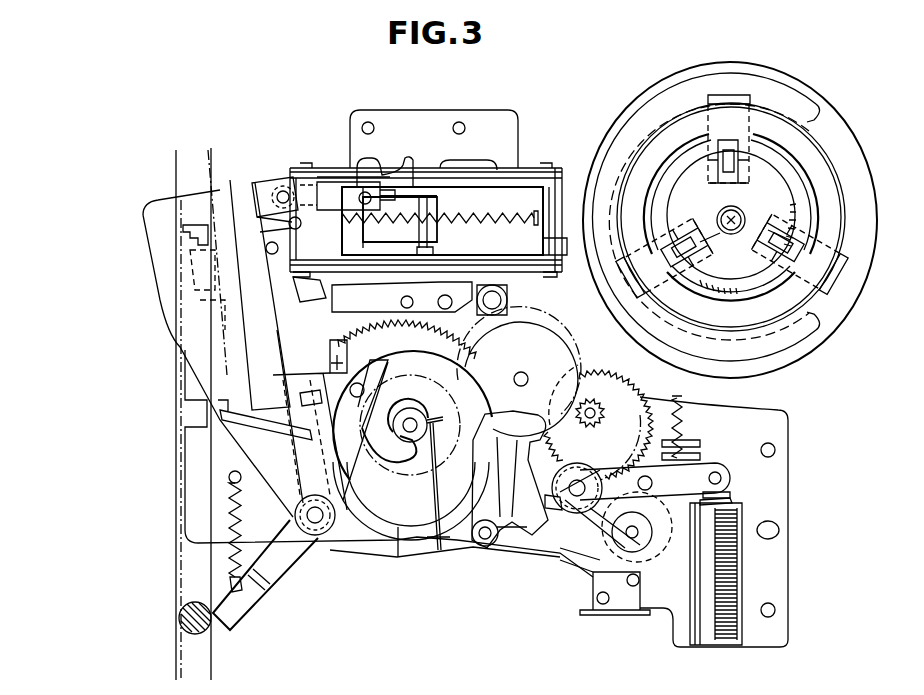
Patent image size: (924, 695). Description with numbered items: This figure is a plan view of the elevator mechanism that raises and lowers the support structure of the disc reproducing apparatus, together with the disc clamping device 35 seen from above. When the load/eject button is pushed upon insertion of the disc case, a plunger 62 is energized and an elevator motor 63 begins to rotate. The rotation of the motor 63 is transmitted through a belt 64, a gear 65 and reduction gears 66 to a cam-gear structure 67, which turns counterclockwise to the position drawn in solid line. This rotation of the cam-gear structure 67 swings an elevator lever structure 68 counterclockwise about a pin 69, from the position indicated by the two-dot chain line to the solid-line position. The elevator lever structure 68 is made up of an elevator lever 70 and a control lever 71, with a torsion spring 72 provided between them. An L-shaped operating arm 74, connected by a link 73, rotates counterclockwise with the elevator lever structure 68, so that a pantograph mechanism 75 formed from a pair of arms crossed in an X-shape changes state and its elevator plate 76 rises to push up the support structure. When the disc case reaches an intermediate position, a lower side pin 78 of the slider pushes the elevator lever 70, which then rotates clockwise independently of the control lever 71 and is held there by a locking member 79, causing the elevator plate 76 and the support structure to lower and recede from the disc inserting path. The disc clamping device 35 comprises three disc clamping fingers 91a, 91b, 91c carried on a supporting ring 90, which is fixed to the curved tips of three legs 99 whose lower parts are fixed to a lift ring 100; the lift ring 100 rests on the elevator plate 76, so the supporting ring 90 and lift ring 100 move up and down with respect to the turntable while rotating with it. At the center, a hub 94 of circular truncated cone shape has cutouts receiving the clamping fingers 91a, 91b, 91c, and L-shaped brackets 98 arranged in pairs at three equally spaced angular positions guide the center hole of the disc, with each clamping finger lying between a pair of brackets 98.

The disc clamping device 35 is at (850, 161).
The plunger 62 is at (740, 568).
The elevator motor 63 is at (621, 553).
The belt 64 is at (583, 520).
The gear 65 is at (582, 470).
The reduction gears 66 is at (570, 300).
The cam-gear structure 67 is at (405, 530).
The elevator lever structure 68 is at (151, 194).
The pin 69 is at (318, 520).
The elevator lever 70 is at (160, 283).
The control lever 71 is at (306, 378).
The torsion spring 72 is at (240, 440).
The link 73 is at (330, 184).
The L-shaped operating arm 74 is at (400, 196).
The pantograph mechanism 75 is at (535, 164).
The elevator plate 76 is at (672, 80).
The lower side pin 78 is at (181, 610).
The locking member 79 is at (275, 265).
The supporting ring 90 is at (808, 150).
The disc clamping finger 91a is at (688, 242).
The disc clamping finger 91b is at (724, 176).
The disc clamping finger 91c is at (762, 250).
The hub 94 is at (790, 215).
The L-shaped brackets 98 is at (742, 160).
The legs 99 is at (736, 94).
The lift ring 100 is at (868, 190).